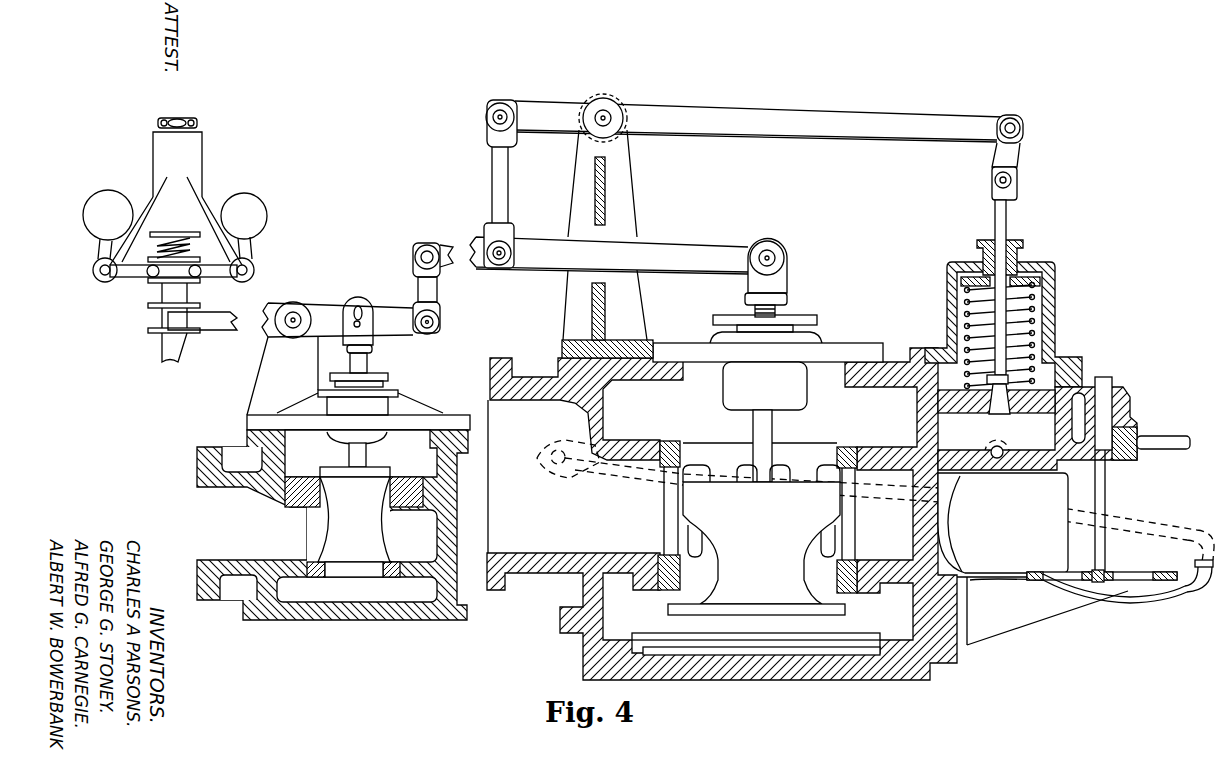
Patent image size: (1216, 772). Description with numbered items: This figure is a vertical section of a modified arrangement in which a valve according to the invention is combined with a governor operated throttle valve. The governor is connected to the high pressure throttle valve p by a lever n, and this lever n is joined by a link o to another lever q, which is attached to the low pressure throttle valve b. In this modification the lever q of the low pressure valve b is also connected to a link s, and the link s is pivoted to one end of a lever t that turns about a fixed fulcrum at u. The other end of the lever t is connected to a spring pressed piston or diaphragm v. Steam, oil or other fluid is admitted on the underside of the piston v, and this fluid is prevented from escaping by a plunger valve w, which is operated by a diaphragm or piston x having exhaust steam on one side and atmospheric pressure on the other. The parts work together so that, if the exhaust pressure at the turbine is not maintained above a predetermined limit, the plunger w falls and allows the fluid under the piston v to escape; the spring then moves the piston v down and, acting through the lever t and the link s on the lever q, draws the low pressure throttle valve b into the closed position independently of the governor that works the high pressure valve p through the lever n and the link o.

The lever t is at (718, 113).
The fixed fulcrum u is at (605, 114).
The link s is at (504, 203).
The lever q is at (703, 250).
The lever n is at (320, 311).
The link o is at (431, 289).
The high pressure throttle valve p is at (340, 537).
The low pressure throttle valve b is at (687, 498).
The spring pressed piston or diaphragm v is at (1038, 380).
The plunger valve w is at (1117, 452).
The diaphragm or piston x is at (1068, 572).